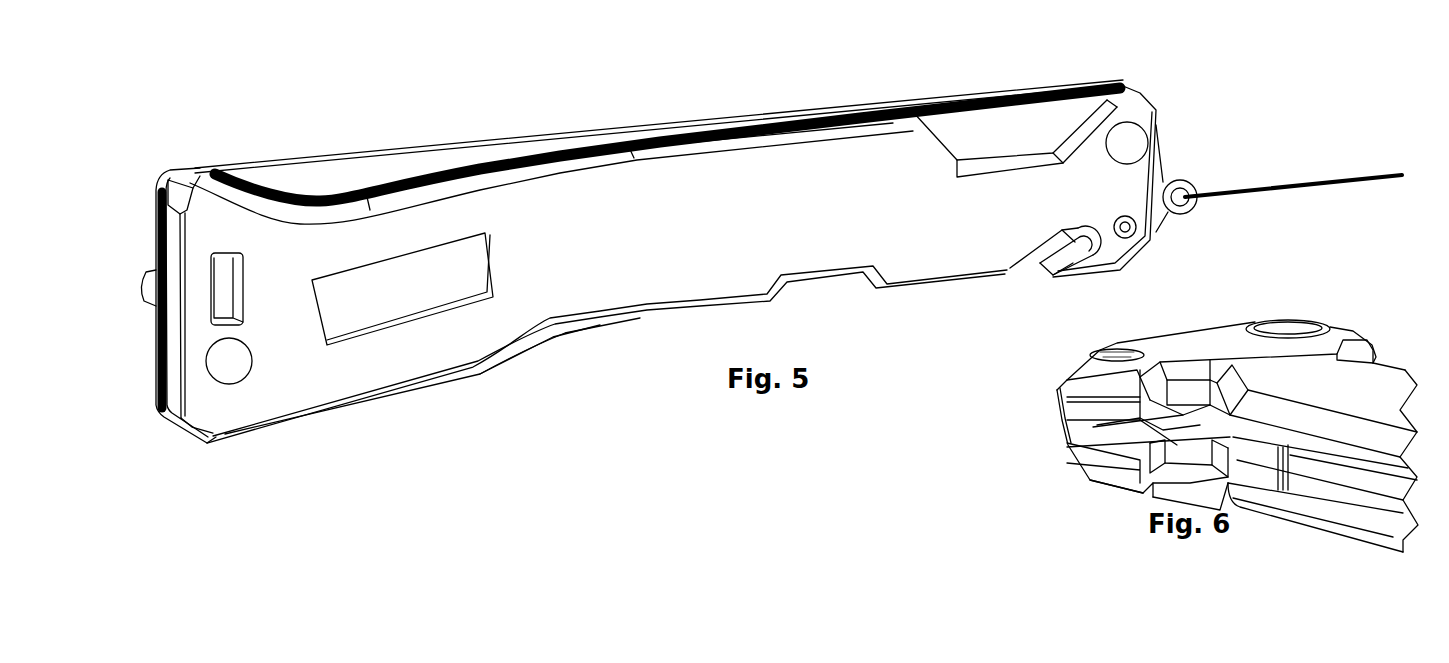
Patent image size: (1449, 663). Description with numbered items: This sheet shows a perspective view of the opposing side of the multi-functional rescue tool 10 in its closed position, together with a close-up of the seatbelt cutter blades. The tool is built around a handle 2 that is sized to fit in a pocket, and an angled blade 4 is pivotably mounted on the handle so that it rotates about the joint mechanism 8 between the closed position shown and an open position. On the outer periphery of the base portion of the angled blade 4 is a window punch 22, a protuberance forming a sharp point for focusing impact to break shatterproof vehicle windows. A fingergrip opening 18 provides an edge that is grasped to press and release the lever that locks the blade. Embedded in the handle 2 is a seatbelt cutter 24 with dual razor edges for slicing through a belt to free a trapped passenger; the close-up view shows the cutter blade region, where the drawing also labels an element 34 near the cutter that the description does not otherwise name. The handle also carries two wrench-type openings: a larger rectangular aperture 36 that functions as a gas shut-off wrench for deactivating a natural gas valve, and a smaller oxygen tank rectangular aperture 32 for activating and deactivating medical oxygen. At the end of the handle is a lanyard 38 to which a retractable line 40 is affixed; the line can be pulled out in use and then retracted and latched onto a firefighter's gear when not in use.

In FIG. 5, the handle 2 is at (647, 283).
In FIG. 6, the handle 2 is at (1212, 345).
In FIG. 5, the angled blade 4 is at (335, 178).
In FIG. 5, the joint mechanism 8 is at (222, 362).
In FIG. 5, the multi-functional rescue tool 10 is at (1155, 66).
In FIG. 5, the fingergrip opening 18 is at (585, 321).
In FIG. 5, the window punch 22 is at (143, 277).
In FIG. 5, the seatbelt cutter 24 is at (980, 132).
In FIG. 5, the oxygen tank rectangular aperture 32 is at (222, 283).
In FIG. 5, the latch 34 is at (1033, 298).
In FIG. 6, the latch 34 is at (1140, 427).
In FIG. 5, the rectangular aperture 36 is at (395, 287).
In FIG. 5, the lanyard 38 is at (1185, 180).
In FIG. 5, the retractable line 40 is at (1364, 175).